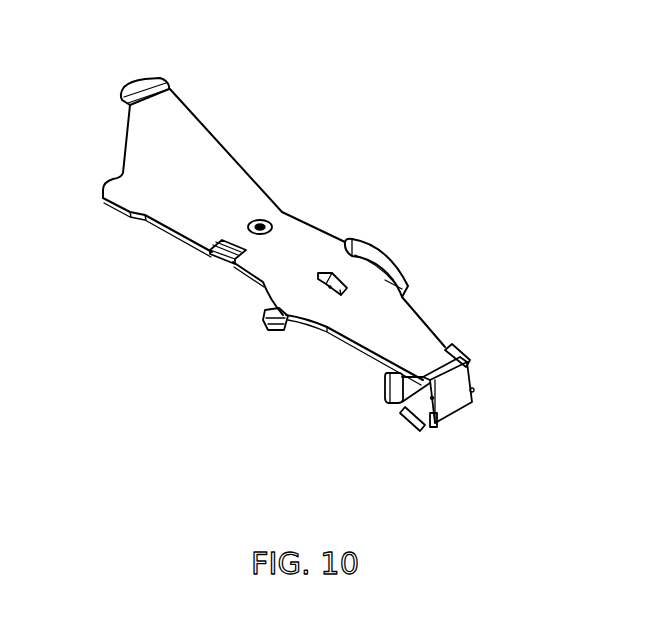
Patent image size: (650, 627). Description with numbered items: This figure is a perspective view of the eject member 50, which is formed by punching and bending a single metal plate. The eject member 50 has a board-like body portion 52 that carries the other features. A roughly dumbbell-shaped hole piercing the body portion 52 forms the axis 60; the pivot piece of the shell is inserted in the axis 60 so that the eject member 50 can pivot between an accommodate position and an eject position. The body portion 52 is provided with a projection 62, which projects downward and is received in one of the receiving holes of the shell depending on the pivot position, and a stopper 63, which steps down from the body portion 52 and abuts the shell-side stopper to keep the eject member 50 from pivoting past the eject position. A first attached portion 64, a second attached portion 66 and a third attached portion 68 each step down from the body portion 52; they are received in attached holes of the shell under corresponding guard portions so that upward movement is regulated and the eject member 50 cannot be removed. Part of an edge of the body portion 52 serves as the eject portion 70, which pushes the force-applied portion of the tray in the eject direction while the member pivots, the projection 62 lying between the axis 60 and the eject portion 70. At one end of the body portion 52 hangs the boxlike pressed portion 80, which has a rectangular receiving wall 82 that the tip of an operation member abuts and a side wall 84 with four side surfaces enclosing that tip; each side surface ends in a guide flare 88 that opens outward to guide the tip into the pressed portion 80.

The eject member 50 is at (413, 113).
The body portion 52 is at (205, 130).
The axis 60 is at (335, 273).
The projection 62 is at (262, 220).
The stopper 63 is at (213, 262).
The first attached portion 64 is at (388, 267).
The second attached portion 66 is at (264, 327).
The third attached portion 68 is at (133, 87).
The eject portion 70 is at (102, 198).
The pressed portion 80 is at (439, 397).
The receiving wall 82 is at (455, 351).
The side wall 84 is at (455, 400).
The guide flare 88 is at (383, 392).